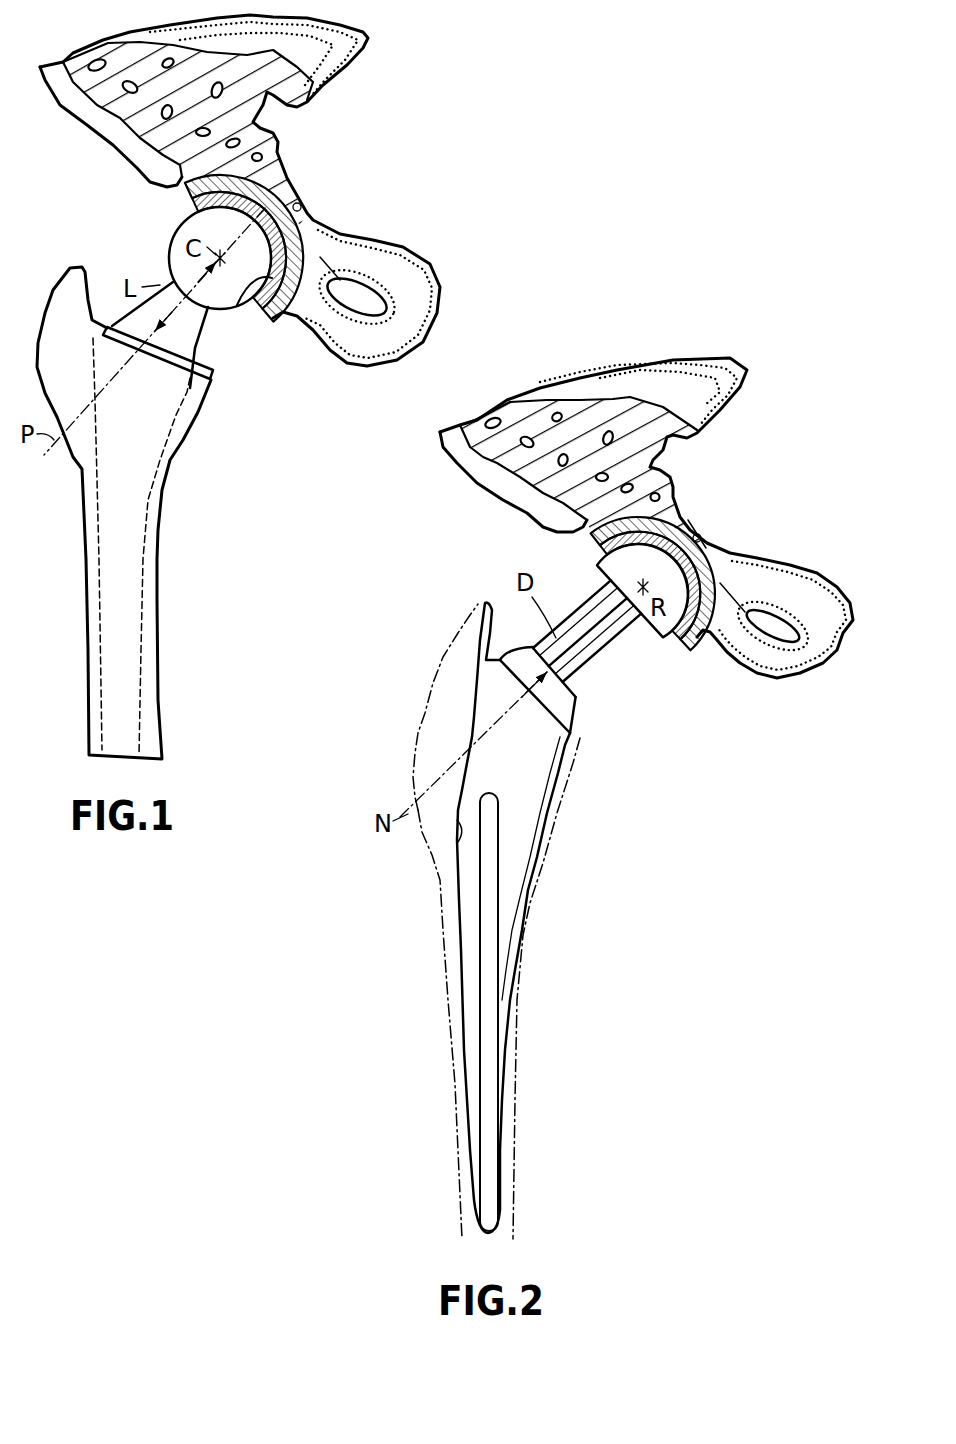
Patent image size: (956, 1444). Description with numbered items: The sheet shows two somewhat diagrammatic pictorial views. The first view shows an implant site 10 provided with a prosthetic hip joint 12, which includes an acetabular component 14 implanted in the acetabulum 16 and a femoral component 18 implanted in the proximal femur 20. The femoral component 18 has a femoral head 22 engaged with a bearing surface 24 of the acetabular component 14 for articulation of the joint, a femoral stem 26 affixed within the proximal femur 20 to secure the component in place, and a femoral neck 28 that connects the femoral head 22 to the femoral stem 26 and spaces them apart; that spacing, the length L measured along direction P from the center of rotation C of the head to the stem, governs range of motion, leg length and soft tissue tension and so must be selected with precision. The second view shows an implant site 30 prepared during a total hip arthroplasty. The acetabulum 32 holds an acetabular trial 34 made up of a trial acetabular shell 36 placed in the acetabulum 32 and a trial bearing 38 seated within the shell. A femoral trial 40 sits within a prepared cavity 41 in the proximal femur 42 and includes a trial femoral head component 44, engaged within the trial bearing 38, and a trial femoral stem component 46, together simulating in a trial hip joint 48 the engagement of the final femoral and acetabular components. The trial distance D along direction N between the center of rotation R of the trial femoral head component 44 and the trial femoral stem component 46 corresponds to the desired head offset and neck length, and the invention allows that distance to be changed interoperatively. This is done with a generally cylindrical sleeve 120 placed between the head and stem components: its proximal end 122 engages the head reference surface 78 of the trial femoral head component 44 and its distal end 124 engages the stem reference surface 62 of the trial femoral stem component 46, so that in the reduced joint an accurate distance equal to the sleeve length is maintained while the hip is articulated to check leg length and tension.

In FIG. 1, the implant site 10 is at (240, 204).
In FIG. 1, the prosthetic hip joint 12 is at (157, 222).
In FIG. 1, the acetabular component 14 is at (255, 271).
In FIG. 1, the acetabulum 16 is at (302, 235).
In FIG. 1, the femoral component 18 is at (214, 384).
In FIG. 1, the proximal femur 20 is at (122, 513).
In FIG. 1, the femoral head 22 is at (183, 263).
In FIG. 1, the bearing surface 24 is at (240, 300).
In FIG. 1, the femoral stem 26 is at (137, 507).
In FIG. 1, the femoral neck 28 is at (197, 347).
In FIG. 2, the implant site 30 is at (646, 547).
In FIG. 2, the acetabulum 32 is at (631, 578).
In FIG. 2, the acetabular trial 34 is at (687, 660).
In FIG. 2, the trial acetabular shell 36 is at (713, 667).
In FIG. 2, the trial bearing 38 is at (707, 570).
In FIG. 2, the femoral trial 40 is at (577, 737).
In FIG. 2, the prepared cavity 41 is at (458, 843).
In FIG. 2, the proximal femur 42 is at (413, 757).
In FIG. 2, the trial femoral head component 44 is at (597, 563).
In FIG. 2, the trial femoral stem component 46 is at (516, 846).
In FIG. 2, the trial hip joint 48 is at (560, 645).
In FIG. 2, the stem reference surface 62 is at (566, 666).
In FIG. 2, the head reference surface 78 is at (627, 632).
In FIG. 2, the sleeve 120 is at (608, 655).
In FIG. 2, the proximal end 122 is at (604, 588).
In FIG. 2, the distal end 124 is at (576, 695).